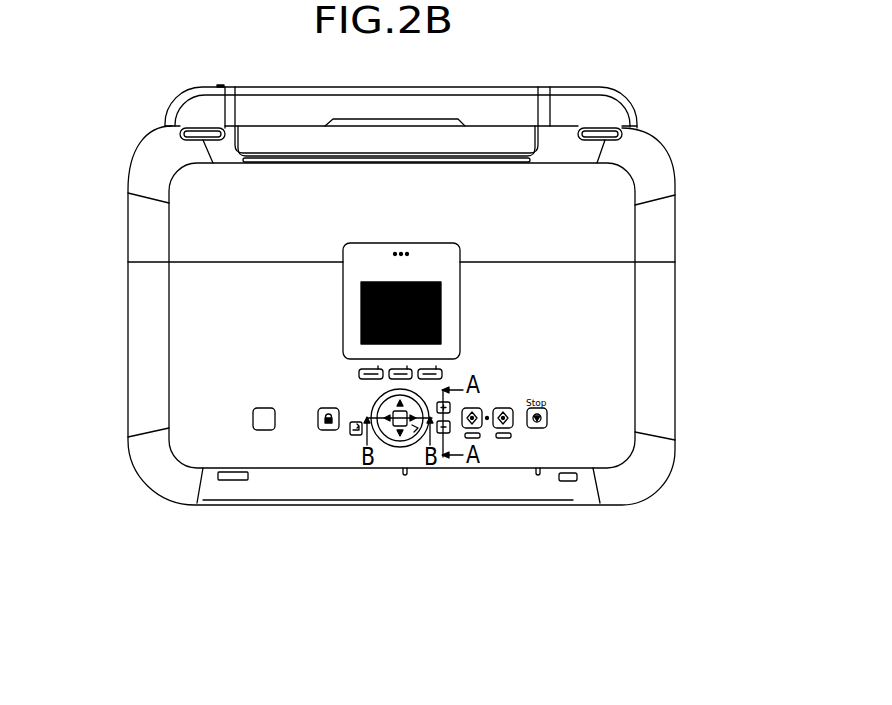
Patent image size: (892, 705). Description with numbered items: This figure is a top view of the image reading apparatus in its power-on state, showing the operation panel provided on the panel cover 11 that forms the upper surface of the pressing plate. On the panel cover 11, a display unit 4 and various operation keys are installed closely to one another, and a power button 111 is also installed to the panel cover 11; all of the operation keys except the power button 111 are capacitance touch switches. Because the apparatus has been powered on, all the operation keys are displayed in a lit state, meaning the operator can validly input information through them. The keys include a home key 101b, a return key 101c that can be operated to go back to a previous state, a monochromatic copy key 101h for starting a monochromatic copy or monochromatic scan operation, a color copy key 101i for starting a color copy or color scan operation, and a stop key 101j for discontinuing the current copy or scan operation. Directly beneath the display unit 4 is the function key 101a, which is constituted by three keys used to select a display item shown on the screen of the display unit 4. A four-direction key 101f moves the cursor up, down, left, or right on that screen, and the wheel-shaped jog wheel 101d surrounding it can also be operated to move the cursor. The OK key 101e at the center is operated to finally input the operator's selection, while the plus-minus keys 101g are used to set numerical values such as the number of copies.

The panel cover 11 is at (184, 409).
The display unit 4 is at (448, 314).
The function key 101a is at (440, 378).
The power button 111 is at (264, 430).
The home key 101b is at (328, 430).
The return key 101c is at (356, 435).
The jog wheel 101d is at (383, 443).
The OK key 101e is at (396, 428).
The four-direction key 101f is at (414, 431).
The plus-minus keys 101g is at (438, 436).
The monochromatic copy key 101h is at (473, 440).
The color copy key 101i is at (503, 440).
The stop key 101j is at (573, 502).